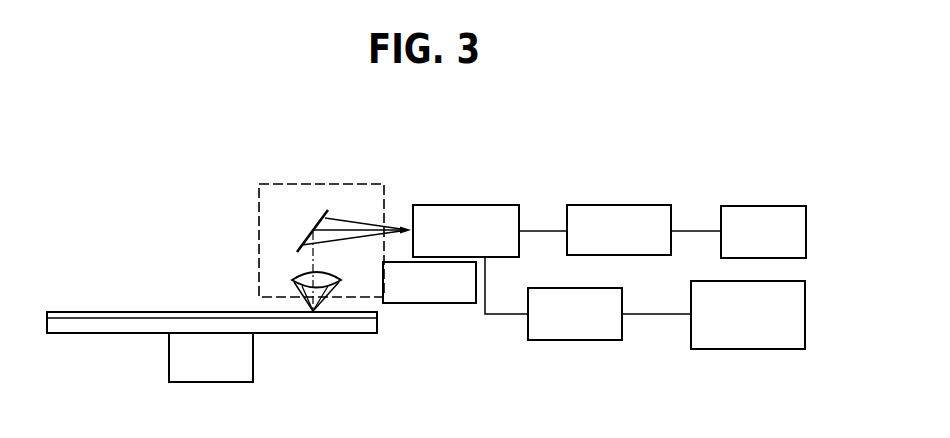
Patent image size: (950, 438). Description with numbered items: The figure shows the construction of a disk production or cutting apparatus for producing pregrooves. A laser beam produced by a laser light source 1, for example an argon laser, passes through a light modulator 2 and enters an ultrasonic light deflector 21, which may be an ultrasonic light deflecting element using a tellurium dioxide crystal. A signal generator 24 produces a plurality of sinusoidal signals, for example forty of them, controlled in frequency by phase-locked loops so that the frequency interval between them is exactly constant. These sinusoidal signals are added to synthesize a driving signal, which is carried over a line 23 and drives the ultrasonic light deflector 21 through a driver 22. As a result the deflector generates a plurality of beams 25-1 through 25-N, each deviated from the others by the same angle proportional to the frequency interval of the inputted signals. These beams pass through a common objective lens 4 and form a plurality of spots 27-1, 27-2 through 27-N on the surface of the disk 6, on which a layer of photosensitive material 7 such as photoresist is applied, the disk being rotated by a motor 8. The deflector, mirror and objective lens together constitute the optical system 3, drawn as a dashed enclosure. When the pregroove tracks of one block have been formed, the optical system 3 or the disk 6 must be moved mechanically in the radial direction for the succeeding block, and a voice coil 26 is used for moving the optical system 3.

The laser light source 1 is at (763, 206).
The light modulator 2 is at (628, 205).
The optical system 3 is at (278, 183).
The objective lens 4 is at (342, 284).
The disk 6 is at (106, 334).
The photosensitive material layer 7 is at (104, 312).
The motor 8 is at (168, 366).
The ultrasonic light deflector 21 is at (459, 205).
The driver 22 is at (578, 340).
The signal line 23 is at (663, 318).
The signal generator 24 is at (747, 349).
The beam 25-1 is at (348, 218).
The beam 25-N is at (355, 237).
The voice coil 26 is at (412, 303).
The spot 27-1 is at (314, 313).
The spot 27-2 is at (307, 298).
The spot 27-N is at (320, 298).